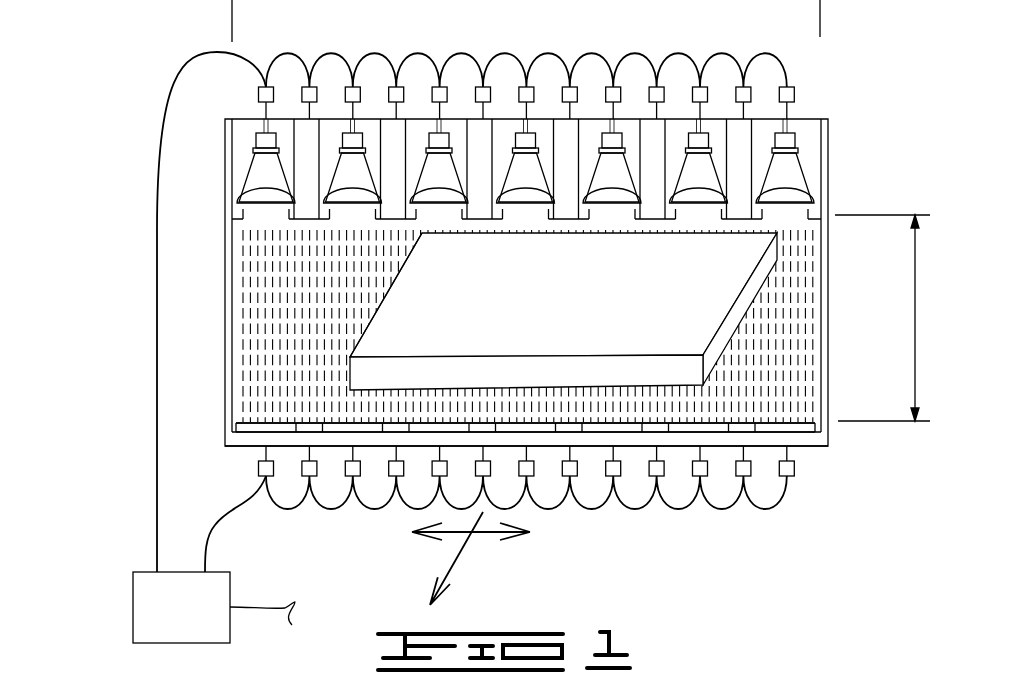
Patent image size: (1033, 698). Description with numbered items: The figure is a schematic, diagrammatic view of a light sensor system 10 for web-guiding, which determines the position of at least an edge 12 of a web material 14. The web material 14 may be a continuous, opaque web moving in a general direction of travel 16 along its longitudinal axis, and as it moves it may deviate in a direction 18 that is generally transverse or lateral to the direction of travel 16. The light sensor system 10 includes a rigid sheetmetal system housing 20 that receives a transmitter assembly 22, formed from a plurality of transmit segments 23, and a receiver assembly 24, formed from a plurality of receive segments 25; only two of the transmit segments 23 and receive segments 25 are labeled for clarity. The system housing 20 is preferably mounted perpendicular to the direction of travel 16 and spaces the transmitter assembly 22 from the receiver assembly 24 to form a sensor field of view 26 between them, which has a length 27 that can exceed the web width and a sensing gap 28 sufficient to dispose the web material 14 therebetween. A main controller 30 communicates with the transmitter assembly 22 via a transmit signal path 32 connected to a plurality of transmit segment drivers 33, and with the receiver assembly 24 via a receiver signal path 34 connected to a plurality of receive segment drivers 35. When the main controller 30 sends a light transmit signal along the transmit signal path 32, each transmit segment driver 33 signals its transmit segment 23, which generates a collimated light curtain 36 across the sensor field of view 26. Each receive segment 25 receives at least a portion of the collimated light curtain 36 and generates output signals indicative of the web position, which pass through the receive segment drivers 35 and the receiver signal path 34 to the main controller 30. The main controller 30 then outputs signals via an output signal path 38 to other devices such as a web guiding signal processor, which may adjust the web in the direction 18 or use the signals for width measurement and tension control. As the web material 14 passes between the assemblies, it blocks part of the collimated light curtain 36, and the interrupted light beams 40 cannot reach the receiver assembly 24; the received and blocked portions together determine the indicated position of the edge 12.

The light sensor system 10 is at (104, 46).
The edge 12 is at (705, 373).
The web material 14 is at (658, 378).
The direction of travel 16 is at (455, 565).
The direction 18 is at (478, 535).
The system housing 20 is at (813, 442).
The transmitter assembly 22 is at (845, 66).
The transmit segment 23 is at (283, 127).
The receiver assembly 24 is at (845, 509).
The receive segment 25 is at (753, 427).
The sensor field of view 26 is at (590, 405).
The length 27 is at (535, 0).
The sensing gap 28 is at (912, 300).
The main controller 30 is at (133, 600).
The transmit signal path 32 is at (157, 390).
The transmit segment driver 33 is at (258, 93).
The receiver signal path 34 is at (223, 527).
The receive segment driver 35 is at (797, 470).
The collimated light curtain 36 is at (305, 268).
The output signal path 38 is at (258, 605).
The interrupted light beam 40 is at (372, 337).